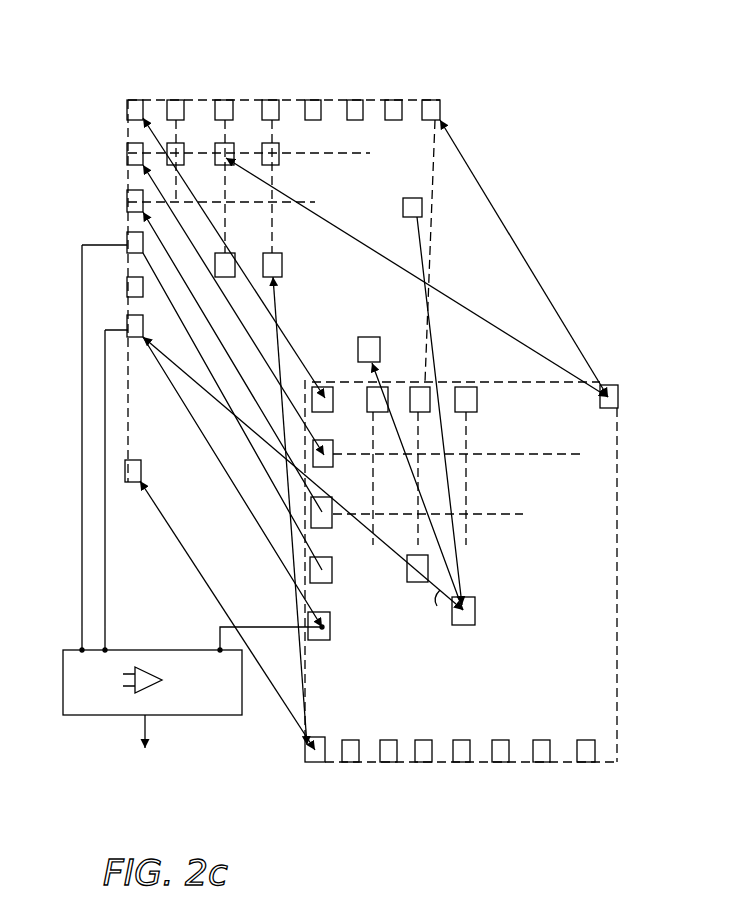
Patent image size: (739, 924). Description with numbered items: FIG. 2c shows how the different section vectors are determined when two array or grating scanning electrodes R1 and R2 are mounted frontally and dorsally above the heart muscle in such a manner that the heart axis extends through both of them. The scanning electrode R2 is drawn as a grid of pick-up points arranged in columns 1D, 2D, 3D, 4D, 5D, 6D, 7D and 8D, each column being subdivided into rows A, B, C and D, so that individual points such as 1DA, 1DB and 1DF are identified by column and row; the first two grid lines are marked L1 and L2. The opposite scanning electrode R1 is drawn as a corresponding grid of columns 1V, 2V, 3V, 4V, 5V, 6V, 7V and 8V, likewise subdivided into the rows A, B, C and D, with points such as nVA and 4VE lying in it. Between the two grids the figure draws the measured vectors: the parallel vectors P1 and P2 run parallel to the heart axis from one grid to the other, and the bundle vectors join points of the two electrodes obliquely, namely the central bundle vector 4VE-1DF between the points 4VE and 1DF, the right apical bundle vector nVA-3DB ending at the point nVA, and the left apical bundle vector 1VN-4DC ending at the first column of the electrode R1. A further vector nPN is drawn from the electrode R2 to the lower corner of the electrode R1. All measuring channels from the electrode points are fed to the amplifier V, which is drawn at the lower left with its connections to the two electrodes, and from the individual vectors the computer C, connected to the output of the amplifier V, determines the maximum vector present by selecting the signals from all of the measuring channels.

The first D-line 1D is at (133, 73).
The second D-line 2D is at (169, 73).
The third D-line 3D is at (215, 73).
The fourth D-line 4D is at (261, 73).
The fifth D-line 5D is at (304, 73).
The sixth D-line 6D is at (346, 73).
The seventh D-line 7D is at (390, 73).
The eighth D-line 8D is at (428, 73).
The first V-line 1V is at (317, 771).
The second V-line 2V is at (354, 772).
The third V-line 3V is at (389, 772).
The fourth V-line 4V is at (424, 772).
The fifth V-line 5V is at (462, 772).
The sixth V-line 6V is at (499, 772).
The seventh V-line 7V is at (542, 772).
The eighth V-line 8V is at (584, 772).
The scanning electrode R1 is at (600, 752).
The scanning electrode R2 is at (127, 107).
The first line L1 is at (178, 98).
The second line L2 is at (127, 152).
The element 1D-A 1DA is at (127, 118).
The element 1D-B 1DB is at (127, 162).
The element 1D-F 1DF is at (128, 326).
The first pulse path P1 is at (220, 233).
The second pulse path P2 is at (172, 220).
The right apical bundle vector nVA-3DB is at (417, 277).
The element nV-A nVA is at (541, 264).
The central bundle vector 4VE-1DF is at (200, 383).
The element 4V-E 4VE is at (475, 622).
The connection nPN is at (202, 570).
The left apical bundle vector 1VN-4DC is at (288, 678).
The amplifier V is at (63, 697).
The sub-line A is at (632, 384).
The sub-line B is at (556, 300).
The computer C is at (400, 481).
The sub-line D is at (555, 397).